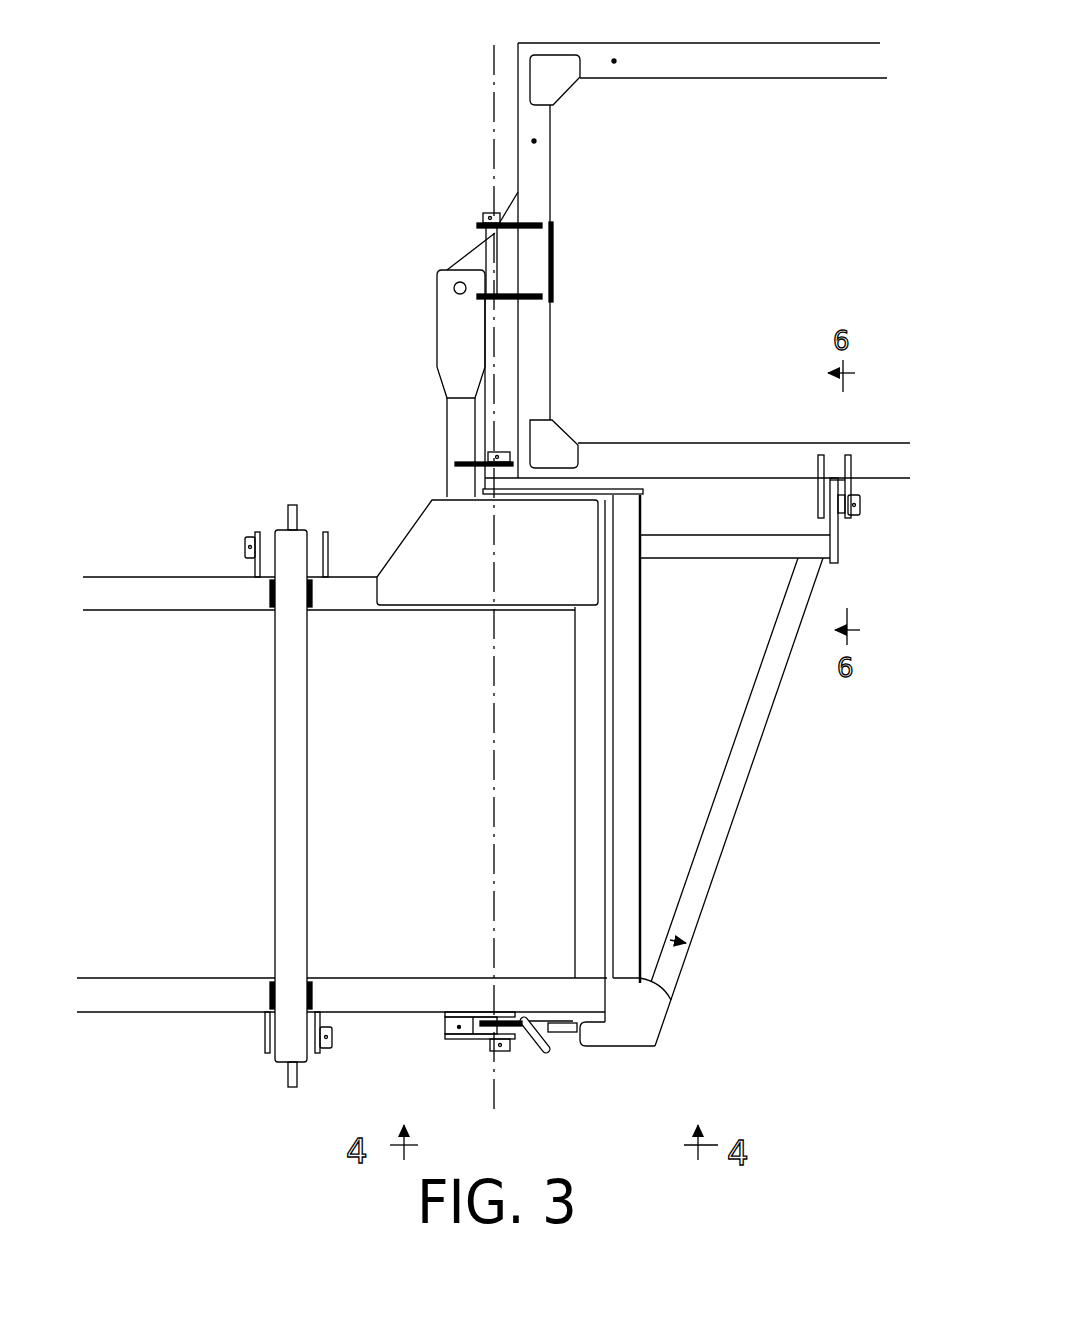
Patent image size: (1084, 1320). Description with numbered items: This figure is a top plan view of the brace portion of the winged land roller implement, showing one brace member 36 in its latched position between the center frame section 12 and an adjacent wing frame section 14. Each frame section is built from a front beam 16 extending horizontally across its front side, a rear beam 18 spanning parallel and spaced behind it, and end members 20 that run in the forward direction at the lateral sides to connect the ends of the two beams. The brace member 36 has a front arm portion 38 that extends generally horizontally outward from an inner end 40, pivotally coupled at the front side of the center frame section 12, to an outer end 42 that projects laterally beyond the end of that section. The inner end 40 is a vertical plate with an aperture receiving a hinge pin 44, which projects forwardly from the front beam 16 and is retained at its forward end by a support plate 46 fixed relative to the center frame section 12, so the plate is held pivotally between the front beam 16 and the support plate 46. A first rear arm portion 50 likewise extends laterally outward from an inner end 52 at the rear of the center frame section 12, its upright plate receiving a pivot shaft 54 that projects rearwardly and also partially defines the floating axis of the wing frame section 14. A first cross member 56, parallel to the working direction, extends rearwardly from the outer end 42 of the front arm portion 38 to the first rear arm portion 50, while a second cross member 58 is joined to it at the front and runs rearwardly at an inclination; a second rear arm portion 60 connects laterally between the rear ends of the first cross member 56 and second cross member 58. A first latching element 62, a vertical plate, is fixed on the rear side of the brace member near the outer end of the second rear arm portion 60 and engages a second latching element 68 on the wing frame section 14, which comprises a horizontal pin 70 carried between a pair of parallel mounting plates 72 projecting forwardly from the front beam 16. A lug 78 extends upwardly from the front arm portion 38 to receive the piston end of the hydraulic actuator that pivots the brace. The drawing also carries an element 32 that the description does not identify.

The center frame section 12 is at (493, 509).
The wing frame section 14 is at (728, 37).
The front beam 16 is at (755, 443).
The rear beam 18 is at (752, 66).
The end member 20 is at (549, 136).
The support post 32 is at (490, 780).
The brace member 36 is at (820, 872).
The front arm portion 38 is at (573, 1048).
The inner end 40 is at (535, 1052).
The outer end 42 is at (658, 1050).
The hinge pin 44 is at (490, 1046).
The support plate 46 is at (466, 1037).
The first rear arm portion 50 is at (570, 497).
The inner end 52 is at (482, 492).
The pivot shaft 54 is at (487, 455).
The first cross member 56 is at (630, 703).
The second cross member 58 is at (754, 743).
The second rear arm portion 60 is at (673, 560).
The first latching element 62 is at (841, 535).
The second latching element 68 is at (813, 465).
The horizontal pin 70 is at (861, 504).
The mounting plates 72 is at (848, 462).
The lug 78 is at (557, 1025).